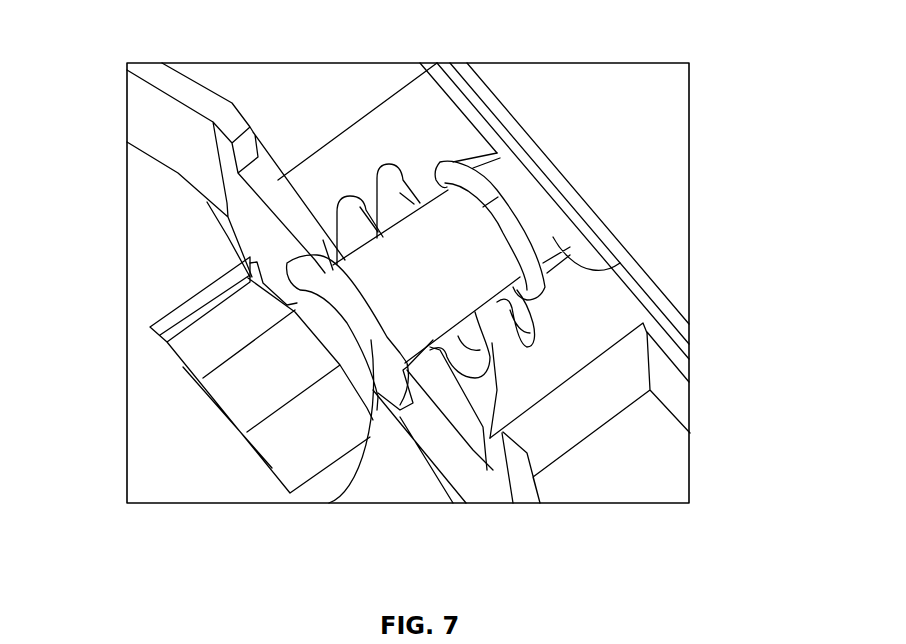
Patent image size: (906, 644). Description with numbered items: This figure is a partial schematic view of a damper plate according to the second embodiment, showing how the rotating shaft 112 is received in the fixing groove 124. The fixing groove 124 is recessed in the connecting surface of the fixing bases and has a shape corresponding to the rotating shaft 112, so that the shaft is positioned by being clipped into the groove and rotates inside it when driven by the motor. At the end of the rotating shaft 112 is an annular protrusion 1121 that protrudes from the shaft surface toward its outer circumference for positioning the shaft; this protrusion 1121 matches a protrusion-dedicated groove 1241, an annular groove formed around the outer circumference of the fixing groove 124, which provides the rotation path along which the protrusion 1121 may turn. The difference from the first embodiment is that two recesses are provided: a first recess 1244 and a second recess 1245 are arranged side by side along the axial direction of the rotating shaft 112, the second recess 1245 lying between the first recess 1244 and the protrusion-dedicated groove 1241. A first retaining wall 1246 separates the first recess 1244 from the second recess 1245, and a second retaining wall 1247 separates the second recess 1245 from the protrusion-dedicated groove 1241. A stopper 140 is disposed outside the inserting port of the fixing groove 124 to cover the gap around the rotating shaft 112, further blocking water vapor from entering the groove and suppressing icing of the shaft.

The rotating shaft 112 is at (292, 337).
The fixing groove 124 is at (600, 272).
The stopper 140 is at (329, 503).
The protrusion 1121 is at (553, 303).
The protrusion-dedicated groove 1241 is at (442, 160).
The first recess 1244 is at (350, 210).
The second recess 1245 is at (391, 178).
The first retaining wall 1246 is at (490, 438).
The second retaining wall 1247 is at (523, 290).